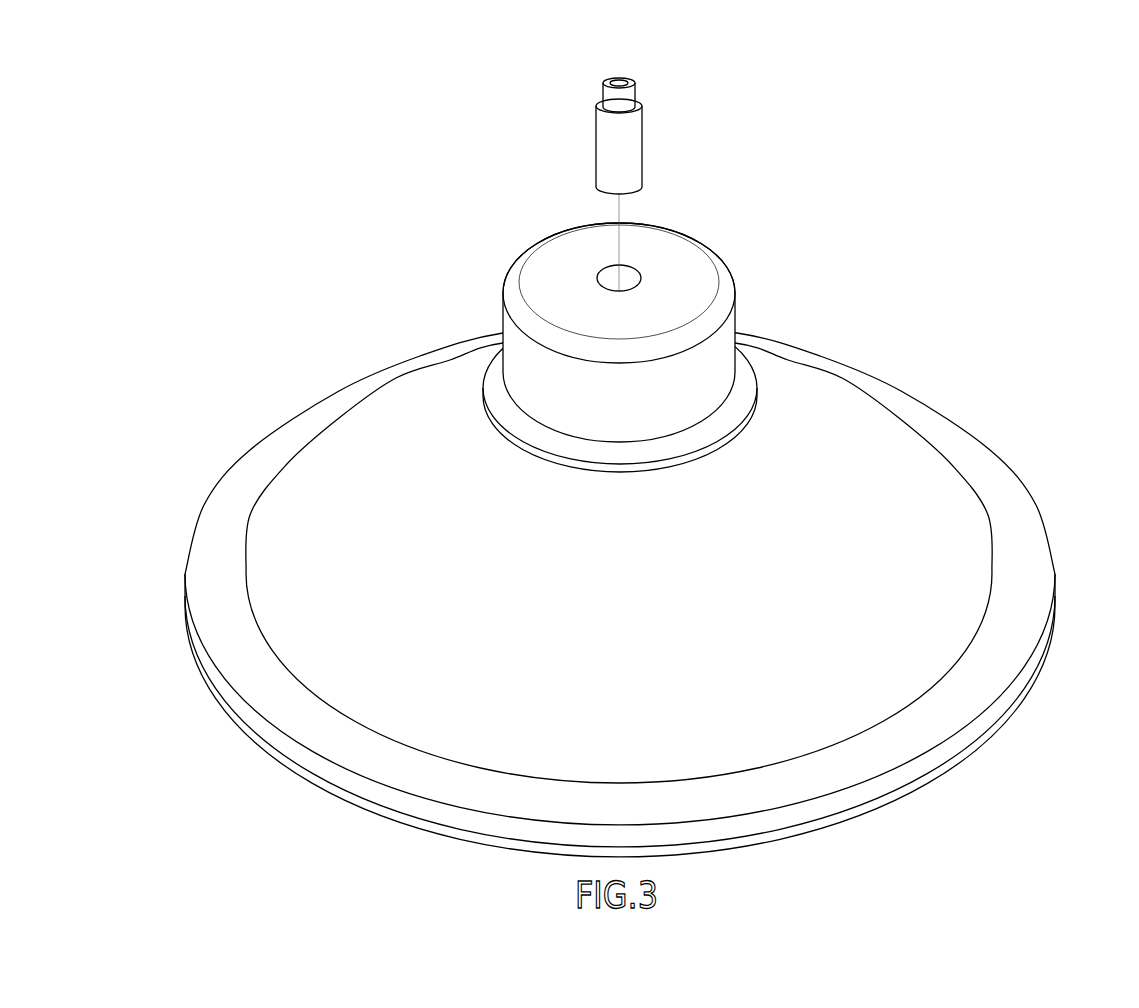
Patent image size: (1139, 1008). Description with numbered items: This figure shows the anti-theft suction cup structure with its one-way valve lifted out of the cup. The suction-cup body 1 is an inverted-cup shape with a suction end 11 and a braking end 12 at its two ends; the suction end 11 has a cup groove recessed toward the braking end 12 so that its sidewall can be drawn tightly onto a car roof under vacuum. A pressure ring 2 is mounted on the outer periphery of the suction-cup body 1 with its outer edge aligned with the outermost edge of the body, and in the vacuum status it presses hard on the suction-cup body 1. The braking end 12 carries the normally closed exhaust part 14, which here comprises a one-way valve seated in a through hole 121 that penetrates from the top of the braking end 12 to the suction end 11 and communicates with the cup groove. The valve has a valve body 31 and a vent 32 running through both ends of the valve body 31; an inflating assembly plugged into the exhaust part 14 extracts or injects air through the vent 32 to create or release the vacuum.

The suction-cup body 1 is at (652, 496).
The suction end 11 is at (915, 480).
The braking end 12 is at (678, 289).
The through hole 121 is at (603, 282).
The exhaust part 14 is at (636, 258).
The pressure ring 2 is at (1015, 512).
The valve body 31 is at (595, 160).
The vent 32 is at (616, 82).